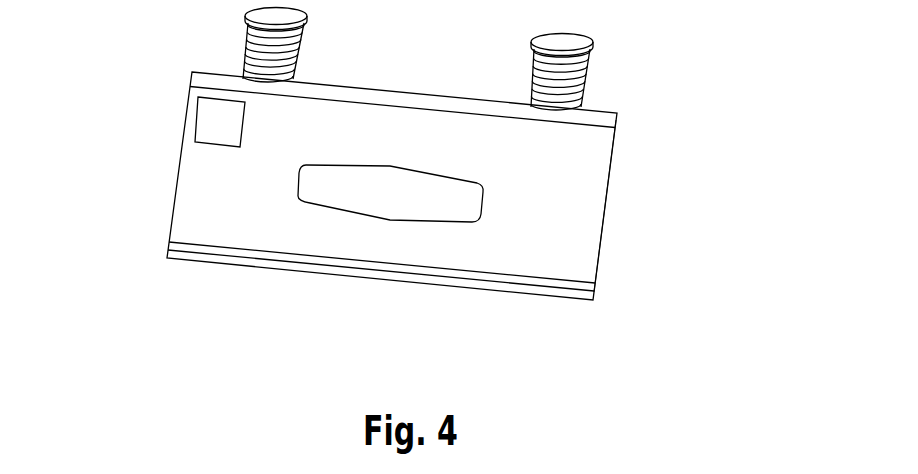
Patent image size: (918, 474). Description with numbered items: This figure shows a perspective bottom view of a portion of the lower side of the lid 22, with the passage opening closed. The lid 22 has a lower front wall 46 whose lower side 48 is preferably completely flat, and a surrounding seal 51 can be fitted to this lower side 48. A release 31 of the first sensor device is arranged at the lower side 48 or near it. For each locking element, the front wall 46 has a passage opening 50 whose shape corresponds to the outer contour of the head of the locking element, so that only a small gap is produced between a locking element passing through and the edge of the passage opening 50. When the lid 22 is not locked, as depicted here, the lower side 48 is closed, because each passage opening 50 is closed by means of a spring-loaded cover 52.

The lid 22 is at (396, 198).
The release 31 is at (210, 122).
The lower front wall 46 is at (615, 160).
The lower side 48 is at (587, 203).
The passage opening 50 is at (390, 151).
The surrounding seal 51 is at (442, 272).
The spring-loaded cover 52 is at (363, 205).